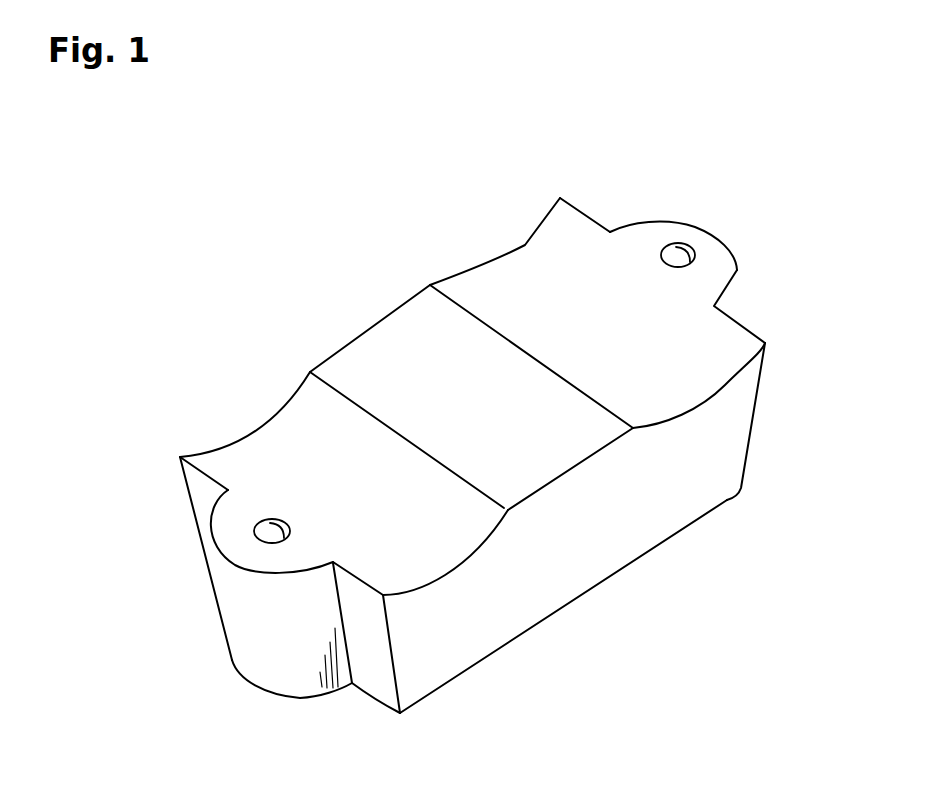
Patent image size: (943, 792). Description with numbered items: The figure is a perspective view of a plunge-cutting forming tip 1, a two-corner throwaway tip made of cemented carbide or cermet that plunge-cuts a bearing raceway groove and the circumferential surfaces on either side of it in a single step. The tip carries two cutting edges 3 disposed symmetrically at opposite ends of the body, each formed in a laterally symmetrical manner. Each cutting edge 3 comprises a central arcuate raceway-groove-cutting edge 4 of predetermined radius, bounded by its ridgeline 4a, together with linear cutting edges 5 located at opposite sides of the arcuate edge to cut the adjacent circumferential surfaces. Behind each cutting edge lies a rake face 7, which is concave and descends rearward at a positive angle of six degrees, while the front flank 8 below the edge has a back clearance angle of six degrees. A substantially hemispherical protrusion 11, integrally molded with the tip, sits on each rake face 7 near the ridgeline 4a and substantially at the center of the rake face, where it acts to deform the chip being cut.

The plunge-cutting forming tip 1 is at (372, 263).
The cutting edge 3 is at (840, 210).
The raceway-groove-cutting edge 4 is at (738, 260).
The ridgeline 4a is at (702, 229).
The linear cutting edge 5 is at (582, 213).
The rake face 7 is at (525, 280).
The front flank 8 is at (260, 665).
The protrusion 11 is at (675, 243).